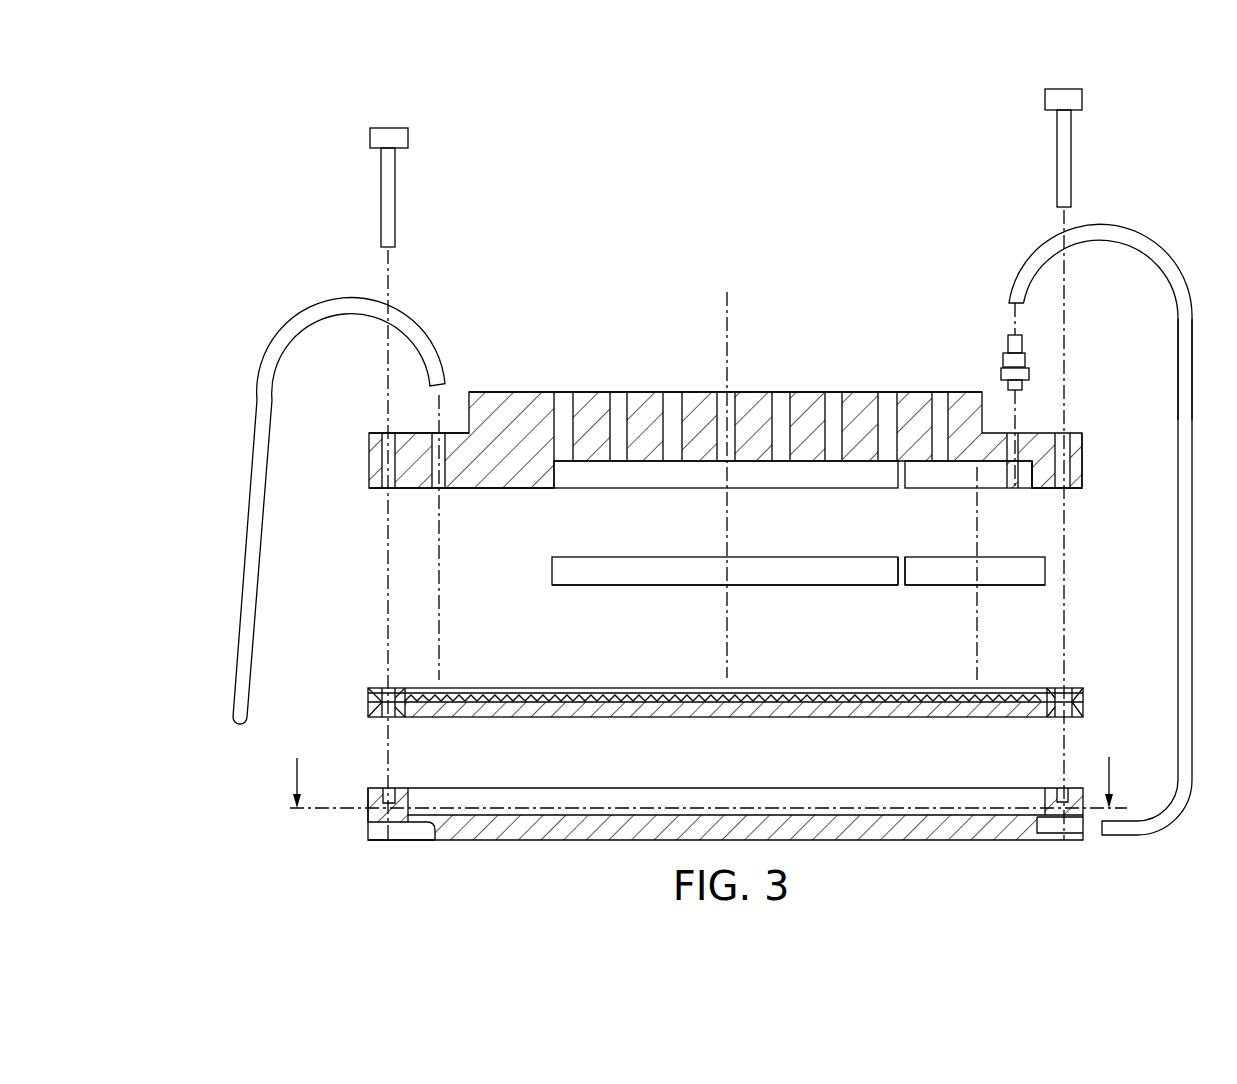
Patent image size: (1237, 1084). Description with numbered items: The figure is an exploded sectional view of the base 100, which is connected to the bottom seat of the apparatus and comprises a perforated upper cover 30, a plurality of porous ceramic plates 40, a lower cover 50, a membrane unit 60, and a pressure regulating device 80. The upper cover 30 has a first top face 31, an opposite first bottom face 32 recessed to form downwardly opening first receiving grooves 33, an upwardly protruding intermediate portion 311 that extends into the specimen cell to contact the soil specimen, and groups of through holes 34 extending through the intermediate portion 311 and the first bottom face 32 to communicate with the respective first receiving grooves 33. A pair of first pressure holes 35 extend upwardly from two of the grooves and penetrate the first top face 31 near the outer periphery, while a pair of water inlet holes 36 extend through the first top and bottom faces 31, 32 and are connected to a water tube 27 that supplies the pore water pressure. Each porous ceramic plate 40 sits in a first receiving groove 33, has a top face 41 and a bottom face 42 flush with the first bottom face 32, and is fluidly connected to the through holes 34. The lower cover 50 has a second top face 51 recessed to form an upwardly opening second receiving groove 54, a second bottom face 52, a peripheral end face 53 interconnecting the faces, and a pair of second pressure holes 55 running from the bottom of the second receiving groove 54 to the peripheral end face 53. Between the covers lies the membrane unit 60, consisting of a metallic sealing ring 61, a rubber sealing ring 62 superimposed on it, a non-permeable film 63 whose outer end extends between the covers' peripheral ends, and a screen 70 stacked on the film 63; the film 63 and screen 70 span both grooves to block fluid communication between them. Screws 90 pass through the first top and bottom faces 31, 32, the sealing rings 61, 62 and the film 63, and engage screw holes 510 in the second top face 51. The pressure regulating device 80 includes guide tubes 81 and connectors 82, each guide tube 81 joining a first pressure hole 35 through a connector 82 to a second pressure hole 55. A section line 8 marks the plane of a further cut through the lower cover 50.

The base 100 is at (856, 236).
The screw 90 is at (403, 192).
The pressure regulating device 80 is at (1091, 473).
The guide tube 81 is at (1186, 272).
The connector 82 is at (1010, 340).
The water tube 27 is at (257, 536).
The upper cover 30 is at (746, 480).
The first top face 31 is at (372, 435).
The intermediate portion 311 is at (807, 392).
The first bottom face 32 is at (376, 490).
The first receiving groove 33 is at (600, 478).
The through hole 34 is at (615, 392).
The first pressure hole 35 is at (1045, 493).
The water inlet hole 36 is at (439, 490).
The top face of porous ceramic plate 41 is at (798, 581).
The bottom face of porous ceramic plate 42 is at (625, 588).
The porous ceramic plate 40 is at (883, 590).
The membrane unit 60 is at (762, 669).
The metallic sealing ring 61 is at (1085, 702).
The rubber sealing ring 62 is at (1083, 692).
The non-permeable film 63 is at (1082, 712).
The screen 70 is at (931, 692).
The lower cover 50 is at (689, 786).
The second top face 51 is at (383, 792).
The second bottom face 52 is at (392, 842).
The peripheral end face 53 is at (368, 797).
The second receiving groove 54 is at (430, 798).
The second pressure hole 55 is at (368, 826).
The screw hole 510 is at (388, 787).
The section line 8 is at (701, 782).